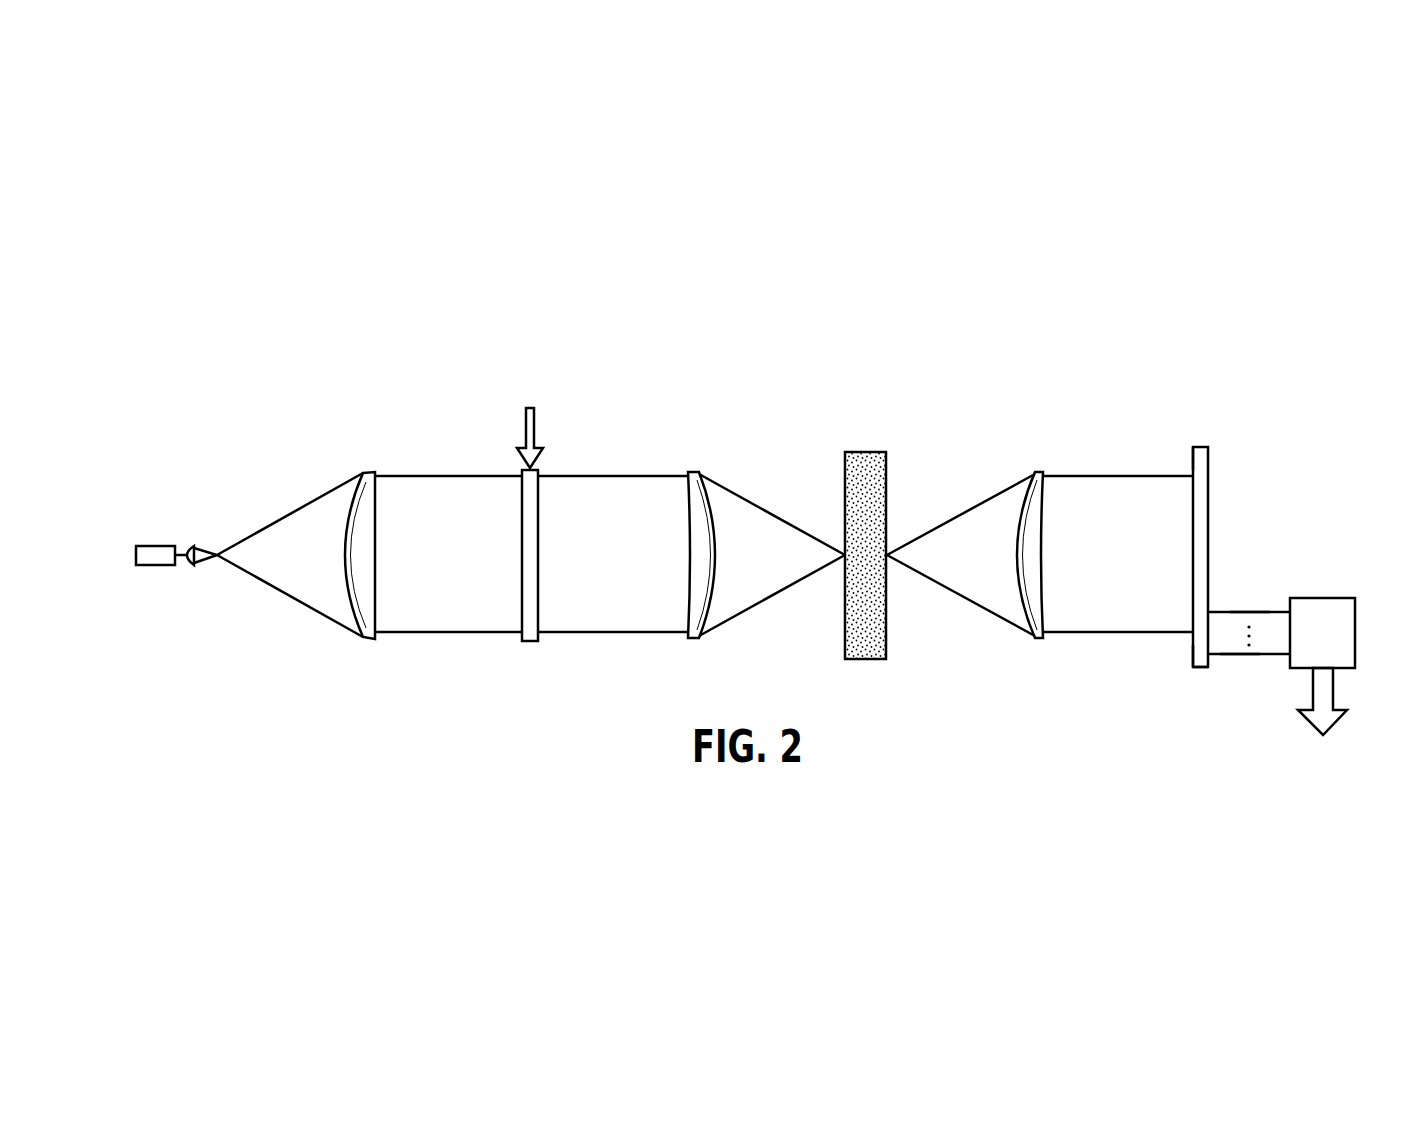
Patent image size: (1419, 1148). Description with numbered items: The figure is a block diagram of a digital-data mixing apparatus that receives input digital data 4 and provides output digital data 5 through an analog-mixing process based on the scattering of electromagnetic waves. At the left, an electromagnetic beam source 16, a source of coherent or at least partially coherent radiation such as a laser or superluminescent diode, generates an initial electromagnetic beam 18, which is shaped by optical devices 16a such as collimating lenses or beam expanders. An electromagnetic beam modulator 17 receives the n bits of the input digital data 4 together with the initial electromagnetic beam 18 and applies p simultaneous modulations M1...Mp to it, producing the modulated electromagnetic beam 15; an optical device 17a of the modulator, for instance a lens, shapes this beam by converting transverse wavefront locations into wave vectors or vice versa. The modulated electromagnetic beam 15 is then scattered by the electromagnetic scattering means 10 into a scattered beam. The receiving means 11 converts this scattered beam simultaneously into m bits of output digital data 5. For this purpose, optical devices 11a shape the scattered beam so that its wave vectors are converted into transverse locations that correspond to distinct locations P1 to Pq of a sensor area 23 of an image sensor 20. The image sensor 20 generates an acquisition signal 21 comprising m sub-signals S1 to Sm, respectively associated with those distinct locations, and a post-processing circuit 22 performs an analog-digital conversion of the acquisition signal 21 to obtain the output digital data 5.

The electromagnetic beam source 16 is at (150, 545).
The initial electromagnetic beam 18 is at (276, 522).
The optical devices 16a is at (364, 471).
The input digital data 4 is at (525, 423).
The electromagnetic beam modulator 17 is at (528, 638).
The modulated electromagnetic beam 15 is at (590, 498).
The simultaneous modulations M1...Mp is at (638, 540).
The optical device 17a is at (690, 638).
The electromagnetic scattering means 10 is at (857, 653).
The optical devices 11a is at (1035, 473).
The receiving means 11 is at (1277, 576).
The image sensor 20 is at (1210, 503).
The first distinct location of the sensor area P1 is at (1192, 458).
The q-th distinct location of the sensor area Pq is at (1192, 650).
The sensor area 23 is at (1199, 668).
The acquisition signal 21 is at (1264, 635).
The first sub-signal S1 is at (1258, 612).
The m-th sub-signal Sm is at (1242, 655).
The post-processing circuit 22 is at (1357, 613).
The output digital data 5 is at (1335, 685).